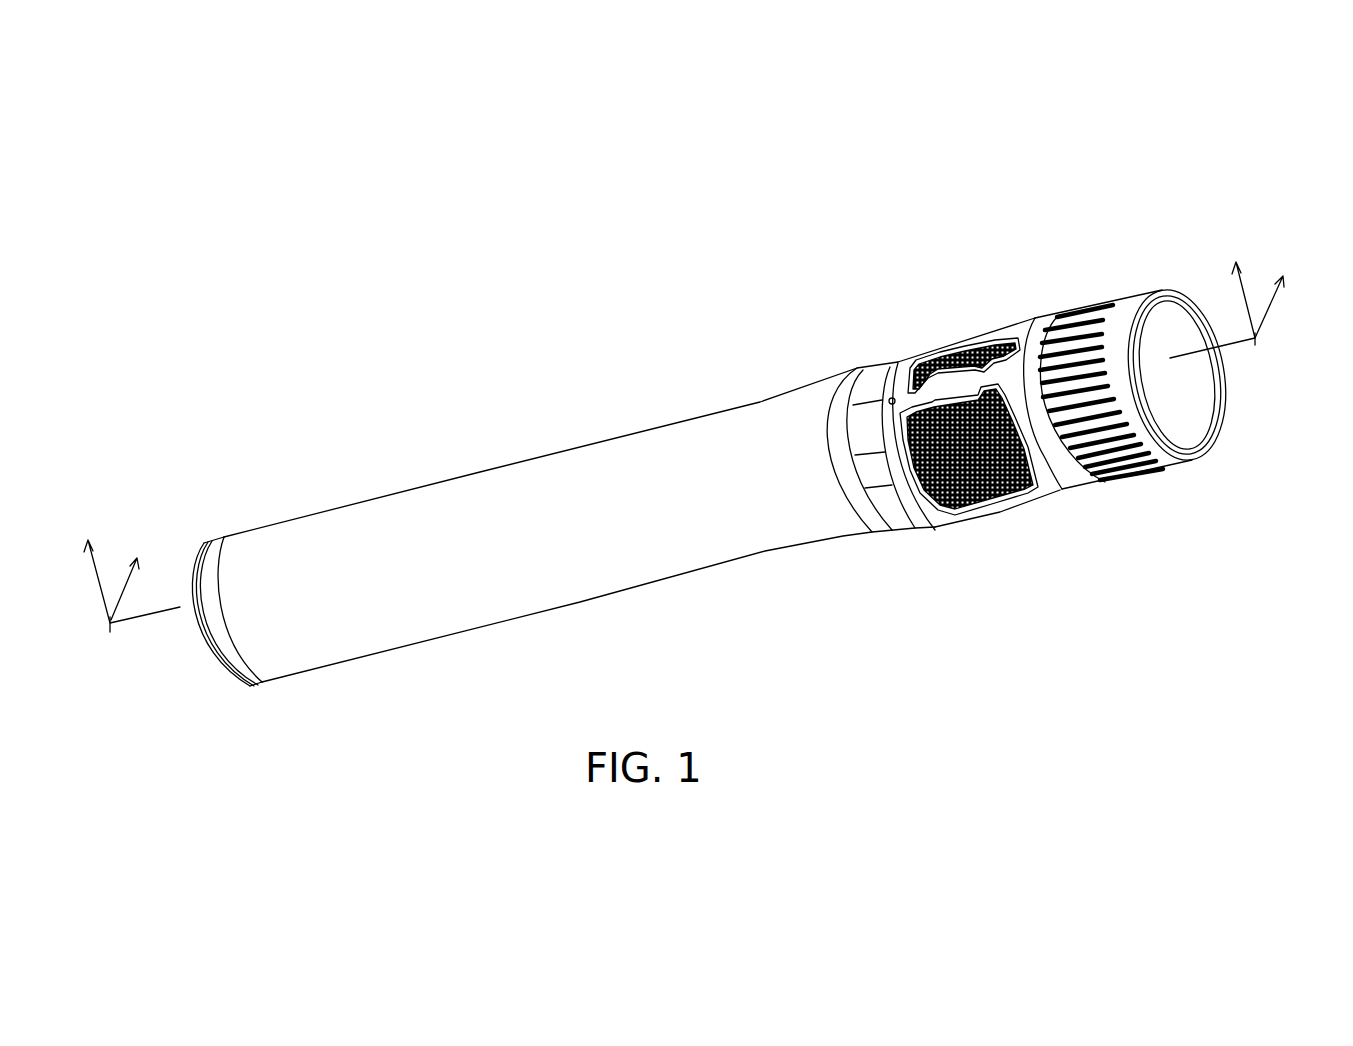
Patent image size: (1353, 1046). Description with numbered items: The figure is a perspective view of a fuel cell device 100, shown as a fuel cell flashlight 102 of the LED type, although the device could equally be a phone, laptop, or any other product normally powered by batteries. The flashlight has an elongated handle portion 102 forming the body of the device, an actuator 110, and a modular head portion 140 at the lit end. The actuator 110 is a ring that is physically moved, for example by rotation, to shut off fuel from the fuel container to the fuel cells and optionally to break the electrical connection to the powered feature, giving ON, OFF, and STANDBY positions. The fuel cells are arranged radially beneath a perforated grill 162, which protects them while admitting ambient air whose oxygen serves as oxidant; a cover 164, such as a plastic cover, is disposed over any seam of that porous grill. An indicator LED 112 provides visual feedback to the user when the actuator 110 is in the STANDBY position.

The fuel cell device 100 is at (429, 279).
The fuel cell flashlight 102 is at (842, 540).
The actuator 110 is at (928, 527).
The indicator LED 112 is at (893, 397).
The modular head portion 140 is at (1166, 470).
The grill 162 is at (957, 340).
The cover 164 is at (1029, 322).